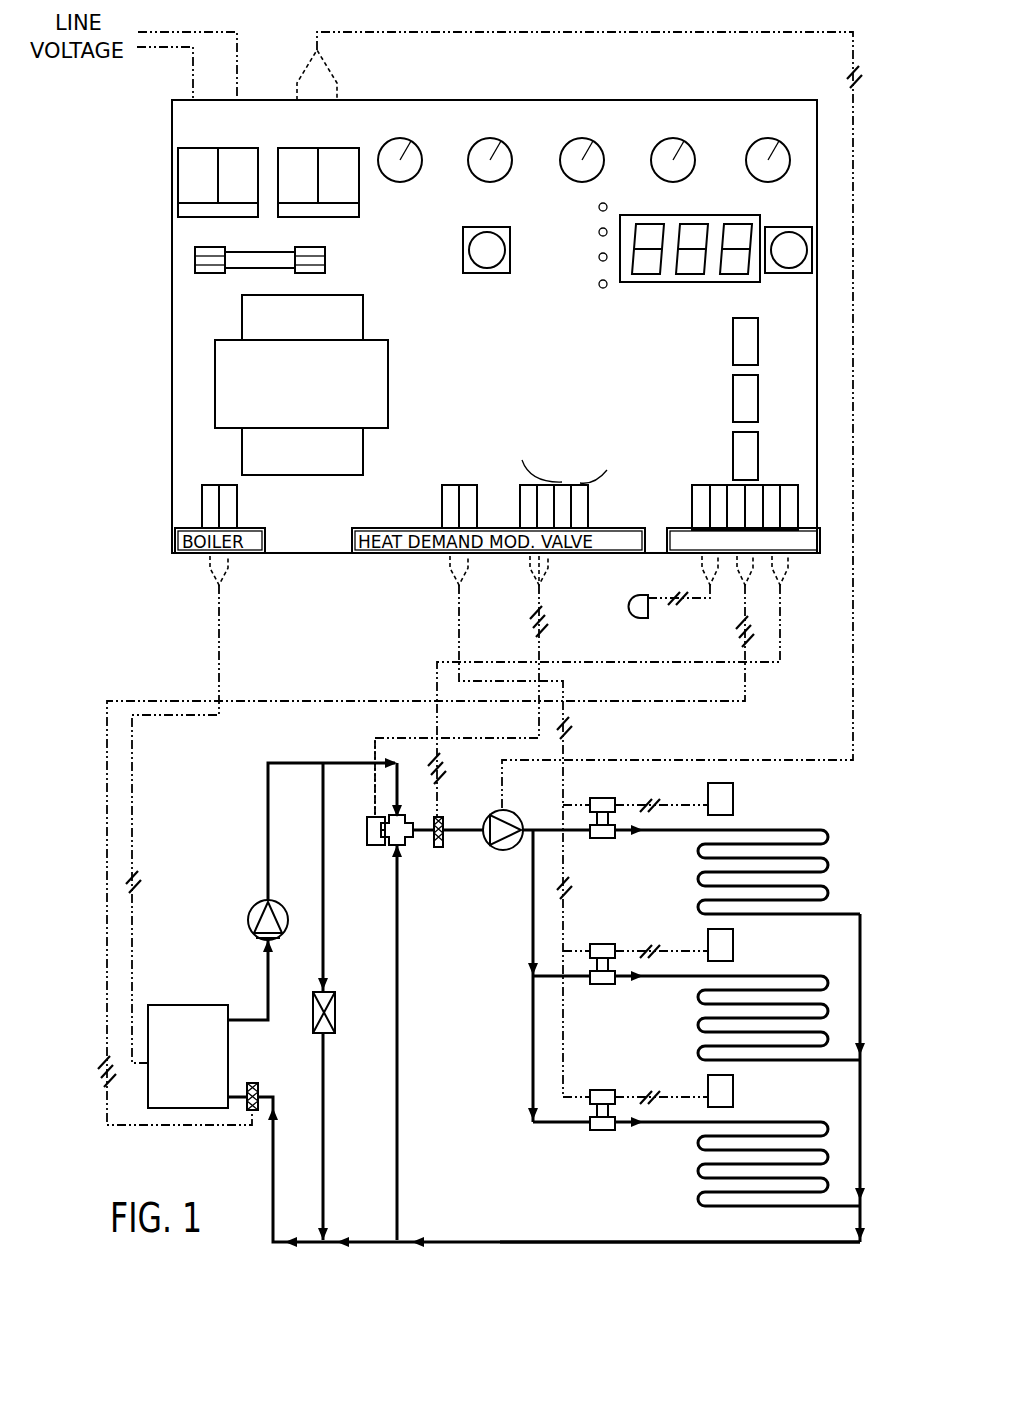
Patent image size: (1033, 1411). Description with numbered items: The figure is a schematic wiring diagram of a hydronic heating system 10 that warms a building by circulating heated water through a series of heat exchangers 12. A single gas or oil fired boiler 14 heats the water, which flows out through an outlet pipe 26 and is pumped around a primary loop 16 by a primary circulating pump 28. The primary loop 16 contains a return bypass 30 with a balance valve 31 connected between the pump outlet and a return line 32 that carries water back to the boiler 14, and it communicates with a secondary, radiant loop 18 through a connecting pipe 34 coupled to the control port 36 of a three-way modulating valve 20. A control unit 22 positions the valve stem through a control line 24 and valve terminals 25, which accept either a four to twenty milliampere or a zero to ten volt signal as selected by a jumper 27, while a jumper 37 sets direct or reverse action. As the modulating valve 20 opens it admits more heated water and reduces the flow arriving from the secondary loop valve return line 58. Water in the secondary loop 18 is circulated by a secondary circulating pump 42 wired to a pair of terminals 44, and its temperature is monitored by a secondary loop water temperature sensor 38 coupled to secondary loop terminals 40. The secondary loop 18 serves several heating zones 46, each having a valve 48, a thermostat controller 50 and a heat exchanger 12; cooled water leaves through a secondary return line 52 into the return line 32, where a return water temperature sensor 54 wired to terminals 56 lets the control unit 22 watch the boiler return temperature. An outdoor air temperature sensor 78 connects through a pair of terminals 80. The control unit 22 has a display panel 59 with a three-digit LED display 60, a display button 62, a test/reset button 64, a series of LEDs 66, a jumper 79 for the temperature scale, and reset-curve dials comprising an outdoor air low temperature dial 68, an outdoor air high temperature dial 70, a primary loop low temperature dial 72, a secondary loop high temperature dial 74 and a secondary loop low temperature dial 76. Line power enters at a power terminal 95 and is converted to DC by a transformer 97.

The hydronic heating system 10 is at (115, 556).
The heat exchanger 12 is at (828, 862).
The boiler 14 is at (168, 1003).
The primary loop 16 is at (290, 836).
The secondary, radiant loop 18 is at (487, 1014).
The modulating valve 20 is at (376, 840).
The control unit 22 is at (450, 72).
The control line 24 is at (375, 740).
The valve terminals 25 is at (567, 425).
The outlet pipe 26 is at (262, 1005).
The jumper 27 is at (745, 408).
The primary circulating pump 28 is at (255, 908).
The return bypass 30 is at (325, 925).
The balance valve 31 is at (335, 1012).
The return line 32 is at (270, 1160).
The connecting pipe 34 is at (370, 767).
The control port 36 is at (402, 815).
The jumper 37 is at (745, 450).
The secondary loop water temperature sensor 38 is at (438, 847).
The secondary loop terminals 40 is at (790, 497).
The secondary circulating pump 42 is at (512, 815).
The pair of terminals 44 is at (305, 195).
The heating zone 46 is at (665, 860).
The valve 48 is at (598, 800).
The thermostat controller 50 is at (725, 808).
The secondary return line 52 is at (570, 1243).
The return water temperature sensor 54 is at (255, 1083).
The terminals 56 is at (725, 492).
The secondary loop valve return line 58 is at (400, 1050).
The display panel 59 is at (800, 183).
The three-digit LED display 60 is at (690, 215).
The display button 62 is at (790, 250).
The test/reset button 64 is at (462, 248).
The LEDs 66 is at (607, 232).
The outdoor air low temperature dial 68 is at (386, 177).
The outdoor air high temperature dial 70 is at (474, 152).
The primary loop low temperature dial 72 is at (565, 152).
The secondary loop high temperature dial 74 is at (656, 152).
The secondary loop low temperature dial 76 is at (750, 152).
The outdoor air temperature sensor 78 is at (635, 605).
The jumper 79 is at (745, 355).
The pair of terminals 80 is at (702, 512).
The power terminal 95 is at (190, 180).
The transformer 97 is at (368, 383).